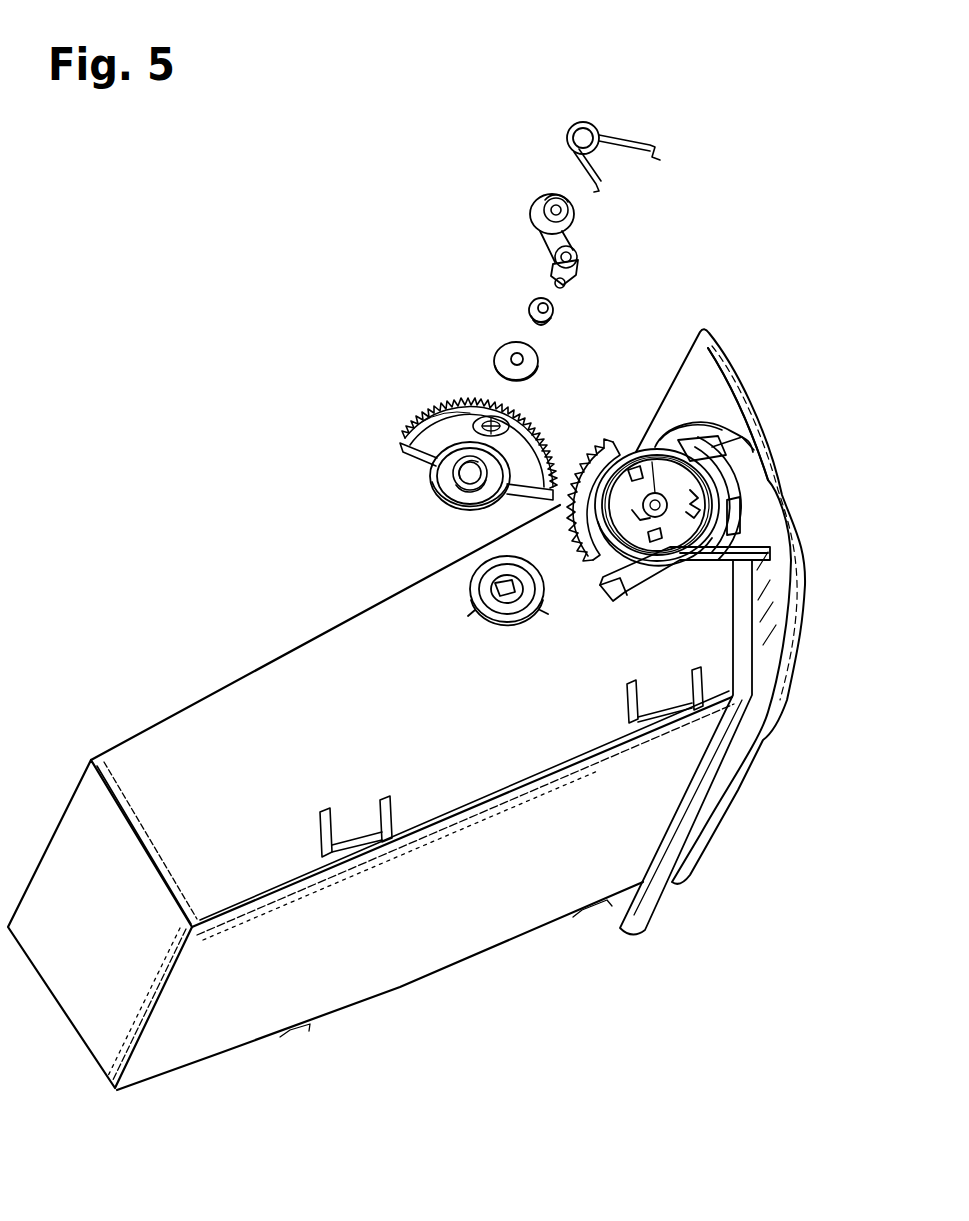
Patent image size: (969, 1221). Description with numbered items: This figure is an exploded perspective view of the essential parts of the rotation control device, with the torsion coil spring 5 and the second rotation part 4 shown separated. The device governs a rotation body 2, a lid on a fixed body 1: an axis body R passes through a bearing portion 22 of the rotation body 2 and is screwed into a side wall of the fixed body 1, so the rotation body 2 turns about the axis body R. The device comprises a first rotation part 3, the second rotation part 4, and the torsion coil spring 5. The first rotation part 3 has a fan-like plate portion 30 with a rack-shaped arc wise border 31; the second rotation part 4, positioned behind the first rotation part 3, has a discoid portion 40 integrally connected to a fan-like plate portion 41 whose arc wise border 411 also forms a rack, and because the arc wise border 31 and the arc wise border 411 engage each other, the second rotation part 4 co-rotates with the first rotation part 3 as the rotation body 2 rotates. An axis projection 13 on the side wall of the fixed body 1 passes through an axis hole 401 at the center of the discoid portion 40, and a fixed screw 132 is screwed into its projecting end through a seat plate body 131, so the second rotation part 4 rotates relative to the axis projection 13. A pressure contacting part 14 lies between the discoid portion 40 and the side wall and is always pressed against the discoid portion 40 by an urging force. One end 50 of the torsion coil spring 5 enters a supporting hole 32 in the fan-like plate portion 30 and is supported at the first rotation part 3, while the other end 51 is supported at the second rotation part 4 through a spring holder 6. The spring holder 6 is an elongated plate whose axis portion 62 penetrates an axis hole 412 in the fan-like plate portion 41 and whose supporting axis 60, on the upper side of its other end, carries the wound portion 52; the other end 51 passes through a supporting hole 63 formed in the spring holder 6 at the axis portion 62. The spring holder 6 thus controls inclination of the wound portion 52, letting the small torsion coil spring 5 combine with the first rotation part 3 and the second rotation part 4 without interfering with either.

The fixed body 1 is at (427, 927).
The rotation body 2 is at (744, 355).
The first rotation part 3 is at (598, 430).
The fan-like plate portion 30 is at (657, 505).
The arc wise border 31 is at (578, 460).
The supporting hole 32 is at (624, 458).
The axis body R is at (742, 429).
The bearing portion 22 is at (722, 452).
The second rotation part 4 is at (398, 436).
The fan-like plate portion 41 is at (413, 421).
The arc wise border 411 is at (426, 408).
The axis hole 412 is at (494, 406).
The discoid portion 40 is at (432, 468).
The axis hole 401 is at (463, 479).
The seat plate body 131 is at (506, 352).
The fixed screw 132 is at (530, 308).
The axis projection 13 is at (470, 585).
The pressure contacting part 14 is at (472, 611).
The torsion coil spring 5 is at (578, 126).
The one end 50 is at (660, 153).
The other end 51 is at (602, 186).
The wound portion 52 is at (592, 127).
The spring holder 6 is at (537, 213).
The supporting axis 60 is at (553, 204).
The axis portion 62 is at (566, 284).
The supporting hole 63 is at (578, 252).